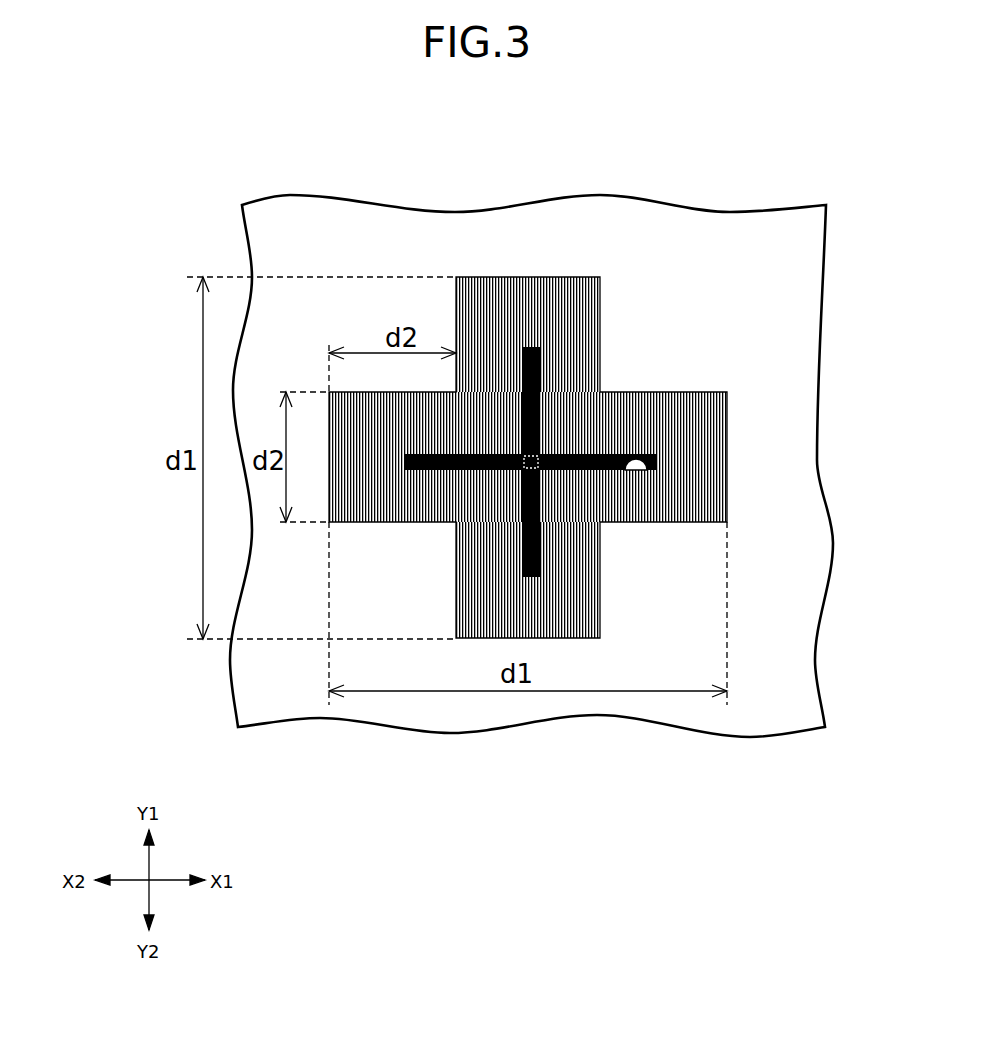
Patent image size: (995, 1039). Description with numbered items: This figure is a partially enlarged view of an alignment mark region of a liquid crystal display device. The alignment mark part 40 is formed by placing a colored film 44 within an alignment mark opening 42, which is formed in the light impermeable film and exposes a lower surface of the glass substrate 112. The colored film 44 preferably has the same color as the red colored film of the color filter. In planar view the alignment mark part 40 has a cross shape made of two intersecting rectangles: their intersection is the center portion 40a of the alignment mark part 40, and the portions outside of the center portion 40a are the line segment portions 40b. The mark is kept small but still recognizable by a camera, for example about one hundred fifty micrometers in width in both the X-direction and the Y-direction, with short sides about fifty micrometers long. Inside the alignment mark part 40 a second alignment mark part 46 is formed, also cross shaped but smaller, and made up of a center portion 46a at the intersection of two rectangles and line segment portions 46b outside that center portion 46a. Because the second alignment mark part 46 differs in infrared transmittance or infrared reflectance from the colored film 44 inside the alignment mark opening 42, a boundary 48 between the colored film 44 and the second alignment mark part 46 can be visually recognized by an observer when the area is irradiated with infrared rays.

The alignment mark part 40 is at (605, 262).
The center portion of the alignment mark part 40a is at (602, 500).
The line segment portions of the alignment mark part 40b is at (583, 617).
The alignment mark opening 42 is at (598, 333).
The colored film 44 is at (720, 460).
The second alignment mark part 46 is at (655, 462).
The center portion of the second alignment mark part 46a is at (535, 457).
The line segment portions of the second alignment mark part 46b is at (604, 460).
The boundary 48 is at (647, 470).
The glass substrate 112 is at (537, 345).